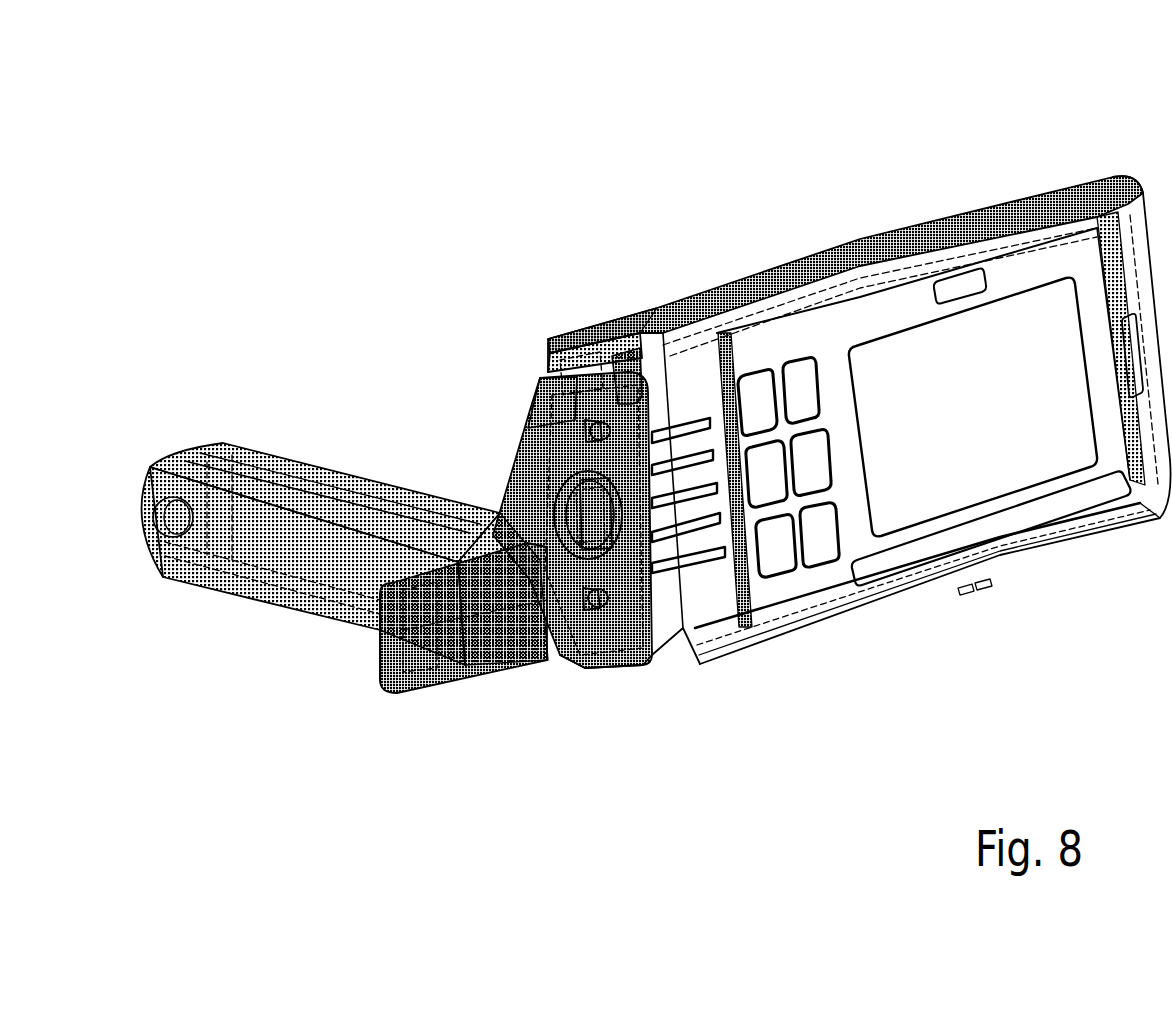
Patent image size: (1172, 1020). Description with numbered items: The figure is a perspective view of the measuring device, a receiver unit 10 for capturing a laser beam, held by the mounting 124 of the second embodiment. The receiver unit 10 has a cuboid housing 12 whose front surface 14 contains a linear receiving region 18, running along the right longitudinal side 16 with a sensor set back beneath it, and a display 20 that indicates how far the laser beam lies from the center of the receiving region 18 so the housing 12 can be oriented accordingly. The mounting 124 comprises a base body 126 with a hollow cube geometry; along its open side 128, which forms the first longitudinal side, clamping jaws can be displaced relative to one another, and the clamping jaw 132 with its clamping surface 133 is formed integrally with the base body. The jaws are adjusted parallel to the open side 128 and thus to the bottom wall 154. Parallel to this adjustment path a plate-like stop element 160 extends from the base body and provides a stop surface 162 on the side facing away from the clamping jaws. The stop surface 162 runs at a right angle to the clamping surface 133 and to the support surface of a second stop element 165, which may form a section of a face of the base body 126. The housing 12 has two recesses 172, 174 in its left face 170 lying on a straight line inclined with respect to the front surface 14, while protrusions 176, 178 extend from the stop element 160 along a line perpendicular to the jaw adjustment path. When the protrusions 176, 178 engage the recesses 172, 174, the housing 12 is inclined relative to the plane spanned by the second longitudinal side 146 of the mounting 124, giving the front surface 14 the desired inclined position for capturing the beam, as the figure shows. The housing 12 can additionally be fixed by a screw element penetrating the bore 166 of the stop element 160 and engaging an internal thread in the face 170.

The receiver unit 10 is at (834, 429).
The housing 12 is at (583, 335).
The front surface 14 is at (847, 323).
The right longitudinal side 16 is at (632, 680).
The receiving region 18 is at (967, 527).
The display 20 is at (1088, 533).
The mounting 124 is at (345, 510).
The base body 126 is at (255, 440).
The open side 128 is at (325, 507).
The clamping jaw 132 is at (460, 656).
The clamping surface 133 is at (380, 657).
The second longitudinal side 146 is at (291, 623).
The bottom wall 154 is at (253, 520).
The stop element 160 is at (626, 486).
The stop surface 162 is at (556, 392).
The second stop element 165 is at (560, 415).
The bore 166 is at (700, 633).
The left face 170 is at (612, 338).
The recess 172 is at (615, 430).
The recess 174 is at (628, 510).
The protrusion 176 is at (578, 373).
The protrusion 178 is at (595, 608).